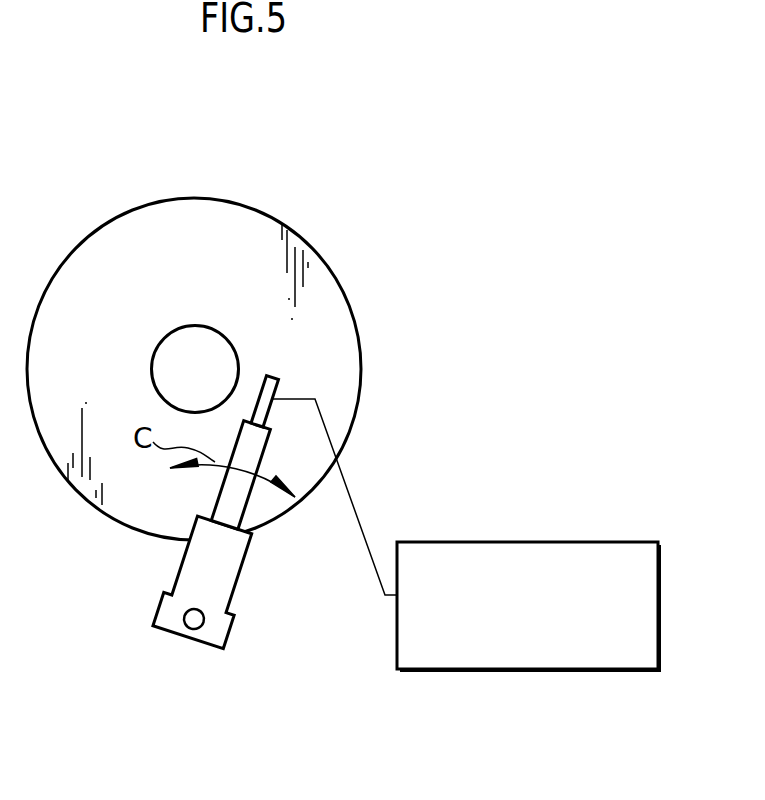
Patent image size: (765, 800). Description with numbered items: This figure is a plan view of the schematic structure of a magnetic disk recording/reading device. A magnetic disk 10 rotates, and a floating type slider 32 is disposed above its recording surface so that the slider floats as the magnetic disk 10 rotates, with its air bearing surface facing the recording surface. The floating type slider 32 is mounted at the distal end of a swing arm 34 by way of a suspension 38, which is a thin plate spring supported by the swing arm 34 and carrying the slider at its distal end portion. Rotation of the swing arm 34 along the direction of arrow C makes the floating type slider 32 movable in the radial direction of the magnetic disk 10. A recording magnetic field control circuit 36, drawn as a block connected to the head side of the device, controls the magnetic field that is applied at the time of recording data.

The magnetic disk 10 is at (363, 350).
The floating type slider 32 is at (275, 380).
The swing arm 34 is at (183, 585).
The recording magnetic field control circuit 36 is at (493, 542).
The suspension 38 is at (266, 460).